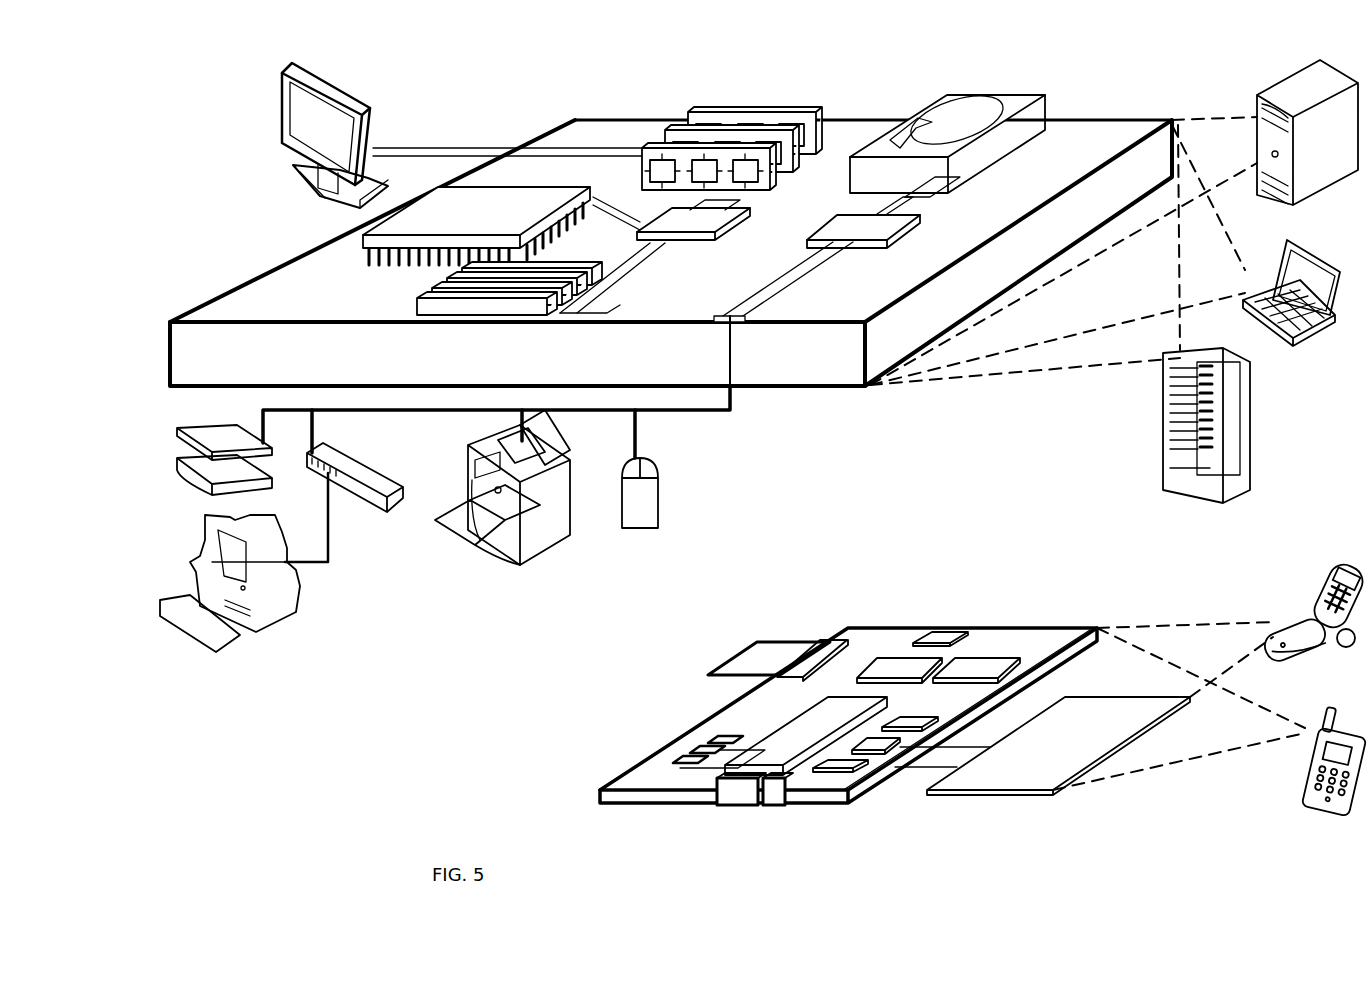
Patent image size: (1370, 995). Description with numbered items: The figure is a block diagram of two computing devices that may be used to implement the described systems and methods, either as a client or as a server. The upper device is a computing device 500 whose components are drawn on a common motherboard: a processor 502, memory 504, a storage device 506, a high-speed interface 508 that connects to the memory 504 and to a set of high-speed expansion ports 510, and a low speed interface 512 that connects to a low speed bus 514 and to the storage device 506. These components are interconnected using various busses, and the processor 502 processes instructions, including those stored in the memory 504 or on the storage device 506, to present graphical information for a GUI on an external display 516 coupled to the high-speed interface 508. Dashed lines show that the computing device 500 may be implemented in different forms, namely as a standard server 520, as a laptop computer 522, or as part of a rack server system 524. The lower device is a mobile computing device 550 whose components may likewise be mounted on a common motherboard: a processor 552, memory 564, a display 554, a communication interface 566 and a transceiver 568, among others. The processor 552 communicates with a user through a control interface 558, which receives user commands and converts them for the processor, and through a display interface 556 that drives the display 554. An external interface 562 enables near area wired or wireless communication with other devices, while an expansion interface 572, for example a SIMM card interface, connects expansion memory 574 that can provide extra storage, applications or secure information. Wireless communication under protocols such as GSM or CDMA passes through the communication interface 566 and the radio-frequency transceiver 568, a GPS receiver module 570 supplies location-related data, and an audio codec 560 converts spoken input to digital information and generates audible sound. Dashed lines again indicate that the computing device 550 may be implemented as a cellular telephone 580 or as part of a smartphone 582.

The computing device 500 is at (492, 86).
The processor 502 is at (364, 240).
The memory 504 is at (705, 113).
The storage device 506 is at (933, 97).
The high-speed interface 508 is at (670, 223).
The high-speed expansion ports 510 is at (420, 298).
The low speed interface 512 is at (865, 225).
The low speed bus 514 is at (745, 326).
The display 516 is at (282, 75).
The standard server 520 is at (1257, 102).
The laptop computer 522 is at (1287, 247).
The rack server system 524 is at (1163, 453).
The mobile computing device 550 is at (832, 602).
The processor 552 is at (783, 778).
The display 554 is at (1055, 792).
The display interface 556 is at (855, 772).
The control interface 558 is at (907, 755).
The audio codec 560 is at (907, 732).
The external interface 562 is at (747, 800).
The memory 564 is at (703, 755).
The communication interface 566 is at (900, 668).
The transceiver 568 is at (979, 665).
The GPS receiver module 570 is at (950, 635).
The expansion interface 572 is at (822, 641).
The expansion memory 574 is at (752, 641).
The cellular telephone 580 is at (1337, 567).
The smartphone 582 is at (1318, 714).